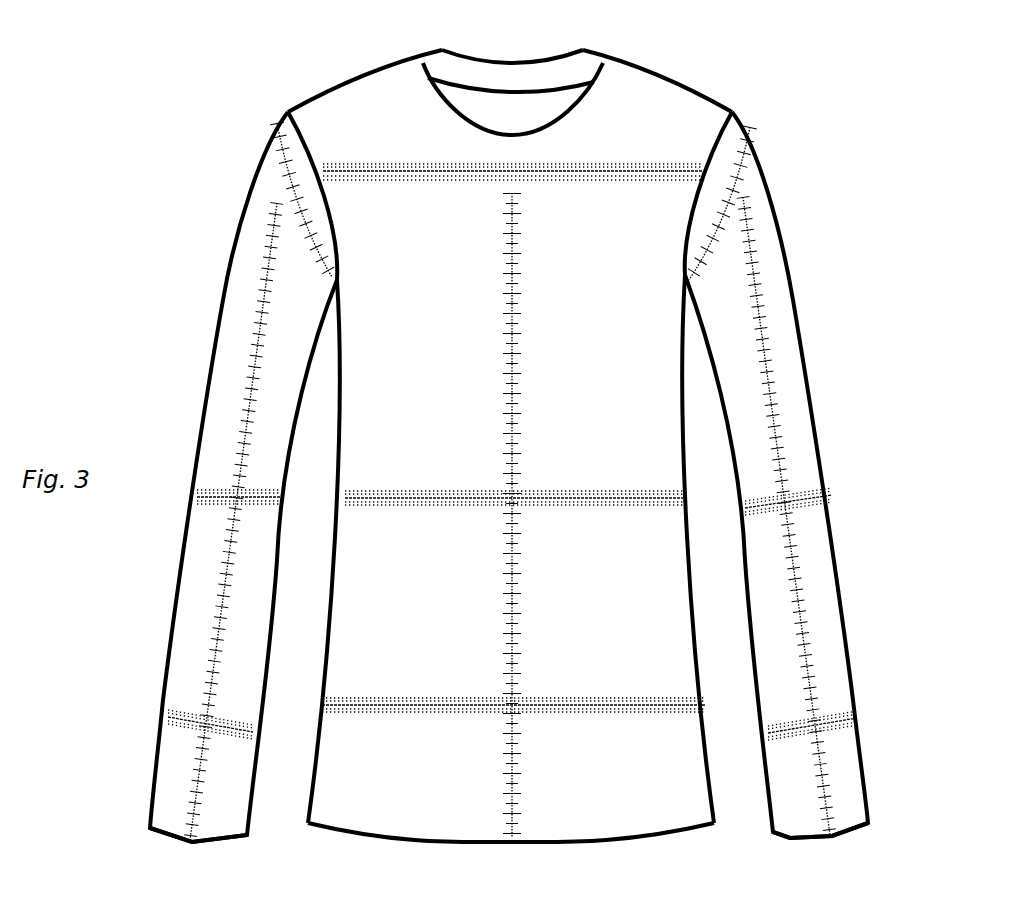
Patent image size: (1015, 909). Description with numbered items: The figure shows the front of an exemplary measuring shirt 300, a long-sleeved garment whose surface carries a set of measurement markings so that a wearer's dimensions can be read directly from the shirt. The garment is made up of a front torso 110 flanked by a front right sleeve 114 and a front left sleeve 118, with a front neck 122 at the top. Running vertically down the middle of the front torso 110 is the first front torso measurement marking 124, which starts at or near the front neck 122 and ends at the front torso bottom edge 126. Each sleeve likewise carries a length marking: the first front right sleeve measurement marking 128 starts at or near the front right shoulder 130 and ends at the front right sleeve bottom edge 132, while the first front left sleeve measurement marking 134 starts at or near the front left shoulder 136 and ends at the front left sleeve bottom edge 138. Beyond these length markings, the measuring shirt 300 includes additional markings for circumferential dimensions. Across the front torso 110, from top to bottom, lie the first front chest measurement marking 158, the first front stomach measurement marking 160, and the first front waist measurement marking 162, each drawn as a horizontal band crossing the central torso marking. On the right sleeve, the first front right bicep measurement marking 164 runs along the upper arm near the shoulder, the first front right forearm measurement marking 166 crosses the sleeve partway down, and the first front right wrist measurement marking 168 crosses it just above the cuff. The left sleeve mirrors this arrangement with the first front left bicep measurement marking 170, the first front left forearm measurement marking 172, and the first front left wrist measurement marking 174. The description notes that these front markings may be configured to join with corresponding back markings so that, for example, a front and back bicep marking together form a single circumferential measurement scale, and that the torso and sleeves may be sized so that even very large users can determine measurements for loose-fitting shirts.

The measuring shirt 300 is at (166, 72).
The front torso 110 is at (510, 436).
The front right sleeve 114 is at (243, 477).
The front left sleeve 118 is at (776, 475).
The front neck 122 is at (428, 102).
The first front torso measurement marking 124 is at (510, 240).
The front torso bottom edge 126 is at (470, 843).
The first front right sleeve measurement marking 128 is at (250, 410).
The front right shoulder 130 is at (322, 174).
The front right sleeve bottom edge 132 is at (177, 842).
The first front left sleeve measurement marking 134 is at (773, 405).
The front left shoulder 136 is at (707, 168).
The front left sleeve bottom edge 138 is at (832, 837).
The first front chest measurement marking 158 is at (620, 167).
The first front stomach measurement marking 160 is at (397, 505).
The first front waist measurement marking 162 is at (377, 710).
The first front right bicep measurement marking 164 is at (283, 150).
The first front right forearm measurement marking 166 is at (210, 500).
The first front right wrist measurement marking 168 is at (180, 720).
The first front left bicep measurement marking 170 is at (743, 153).
The first front left forearm measurement marking 172 is at (808, 500).
The first front left wrist measurement marking 174 is at (833, 727).